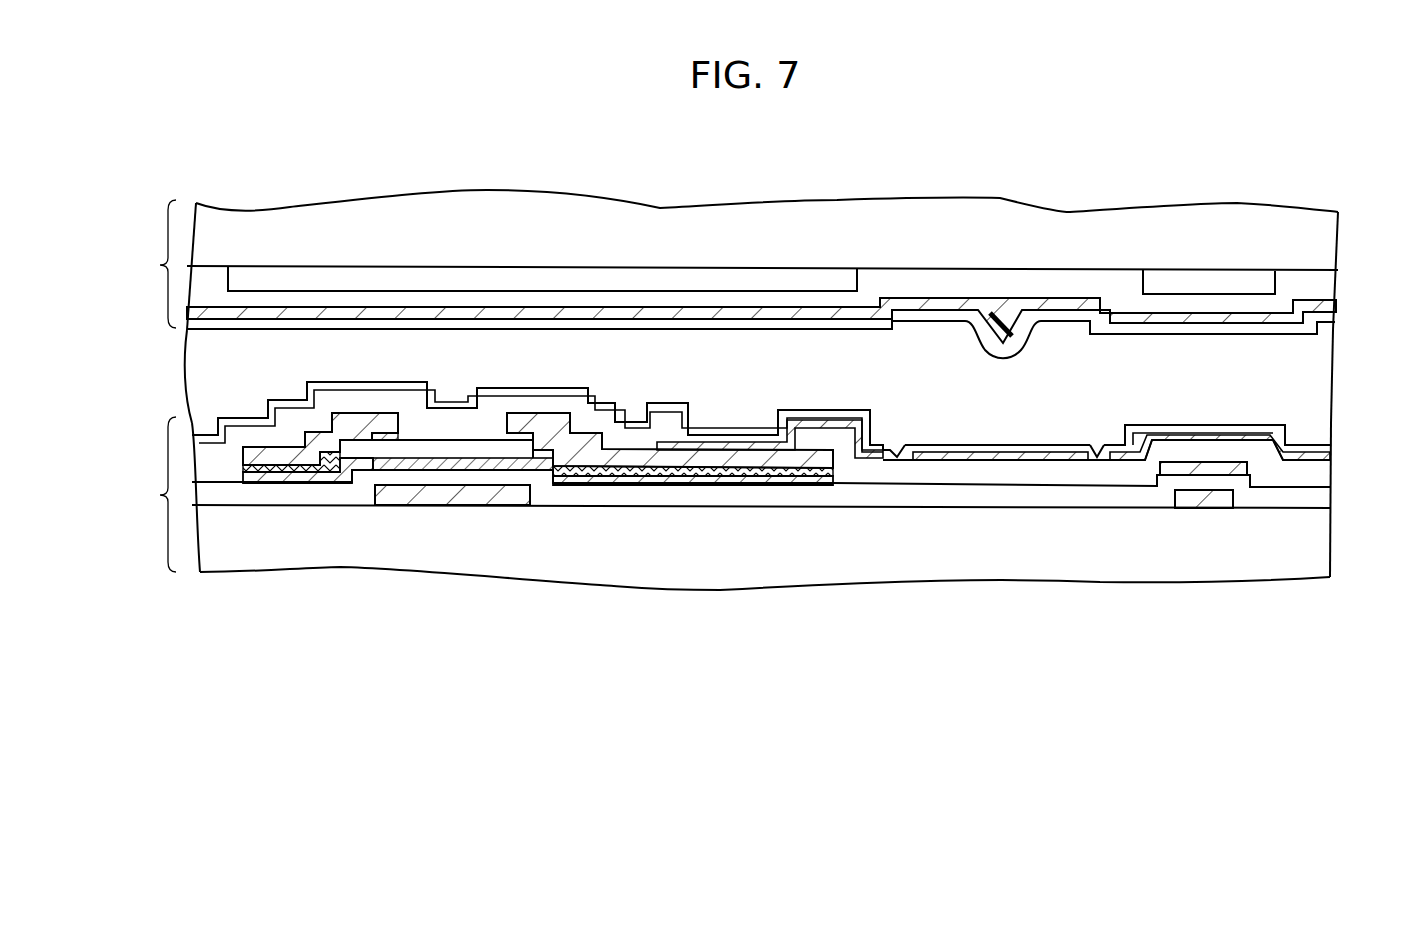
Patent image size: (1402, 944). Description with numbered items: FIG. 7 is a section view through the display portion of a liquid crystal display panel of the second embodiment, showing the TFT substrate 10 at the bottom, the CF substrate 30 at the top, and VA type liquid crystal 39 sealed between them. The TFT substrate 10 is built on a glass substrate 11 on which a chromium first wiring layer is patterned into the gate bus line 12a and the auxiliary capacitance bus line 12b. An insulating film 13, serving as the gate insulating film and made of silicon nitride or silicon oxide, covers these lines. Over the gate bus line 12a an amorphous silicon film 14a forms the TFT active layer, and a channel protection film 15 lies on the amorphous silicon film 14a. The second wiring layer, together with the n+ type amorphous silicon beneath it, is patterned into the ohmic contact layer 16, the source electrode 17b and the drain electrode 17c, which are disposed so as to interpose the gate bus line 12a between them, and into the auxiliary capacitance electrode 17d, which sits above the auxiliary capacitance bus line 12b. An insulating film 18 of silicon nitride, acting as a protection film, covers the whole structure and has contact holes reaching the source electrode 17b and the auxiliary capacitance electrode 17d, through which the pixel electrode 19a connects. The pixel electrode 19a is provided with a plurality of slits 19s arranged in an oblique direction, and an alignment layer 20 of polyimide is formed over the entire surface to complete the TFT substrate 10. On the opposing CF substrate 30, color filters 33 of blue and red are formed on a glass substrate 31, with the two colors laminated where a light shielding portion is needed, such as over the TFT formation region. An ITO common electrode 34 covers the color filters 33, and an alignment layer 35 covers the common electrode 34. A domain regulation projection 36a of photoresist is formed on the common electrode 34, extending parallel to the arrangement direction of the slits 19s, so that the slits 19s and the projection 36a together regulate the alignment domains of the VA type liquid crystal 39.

The TFT substrate 10 is at (149, 494).
The glass substrate 11 is at (1322, 545).
The gate bus line 12a is at (467, 500).
The auxiliary capacitance bus line 12b is at (1203, 508).
The insulating film (gate insulating film) 13 is at (1330, 497).
The amorphous silicon film 14a is at (537, 470).
The channel protection film 15 is at (487, 440).
The ohmic contact layer 16 is at (287, 483).
The source electrode 17b is at (652, 452).
The drain electrode 17c is at (343, 413).
The auxiliary capacitance electrode 17d is at (1207, 462).
The insulating film (protection film) 18 is at (397, 382).
The pixel electrode 19a is at (1048, 452).
The slit 19s is at (897, 447).
The alignment layer 20 is at (818, 416).
The CF substrate 30 is at (727, 265).
The glass substrate 31 is at (1330, 236).
The color filter 33 is at (652, 274).
The common electrode 34 is at (752, 320).
The alignment layer 35 is at (890, 331).
The domain regulation projection 36a is at (990, 330).
The VA type liquid crystal 39 is at (206, 377).